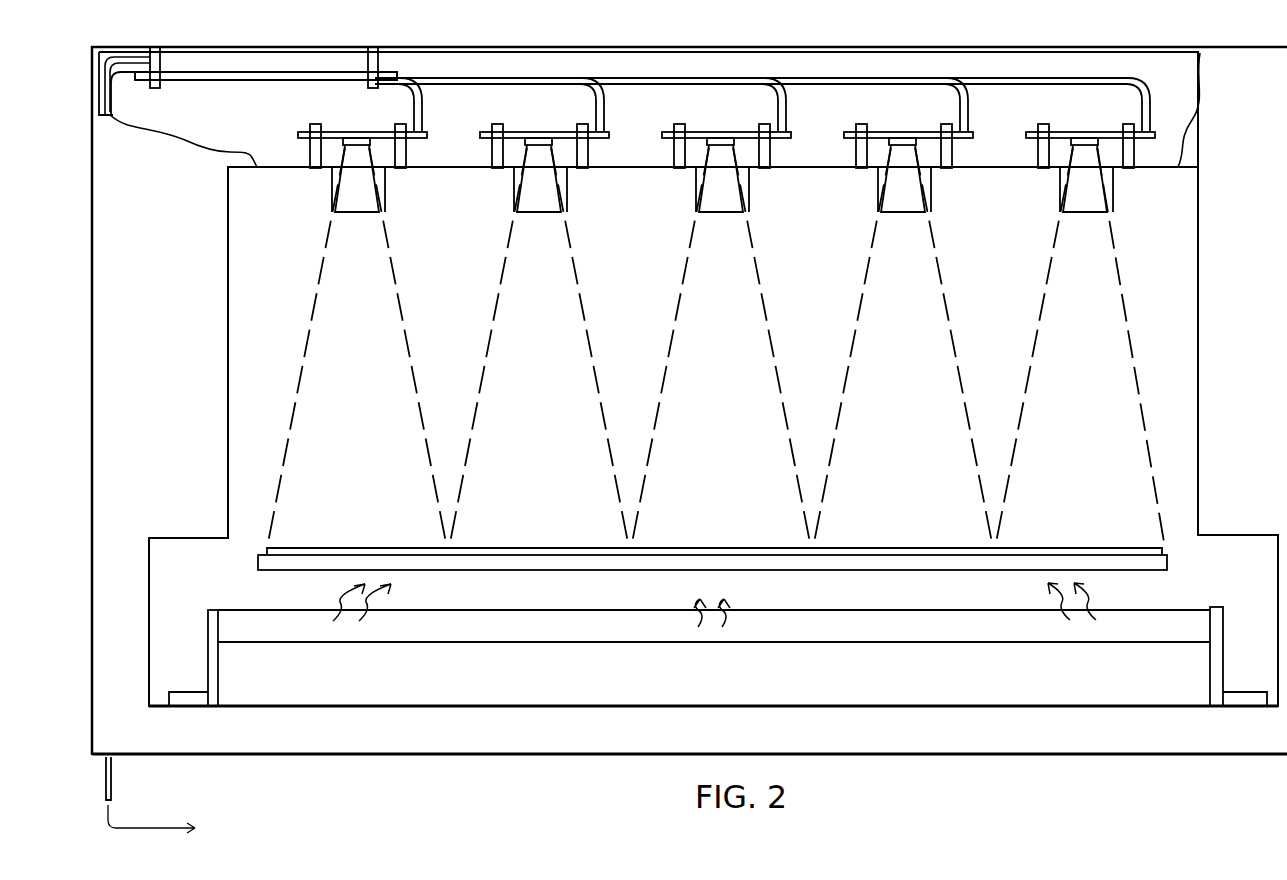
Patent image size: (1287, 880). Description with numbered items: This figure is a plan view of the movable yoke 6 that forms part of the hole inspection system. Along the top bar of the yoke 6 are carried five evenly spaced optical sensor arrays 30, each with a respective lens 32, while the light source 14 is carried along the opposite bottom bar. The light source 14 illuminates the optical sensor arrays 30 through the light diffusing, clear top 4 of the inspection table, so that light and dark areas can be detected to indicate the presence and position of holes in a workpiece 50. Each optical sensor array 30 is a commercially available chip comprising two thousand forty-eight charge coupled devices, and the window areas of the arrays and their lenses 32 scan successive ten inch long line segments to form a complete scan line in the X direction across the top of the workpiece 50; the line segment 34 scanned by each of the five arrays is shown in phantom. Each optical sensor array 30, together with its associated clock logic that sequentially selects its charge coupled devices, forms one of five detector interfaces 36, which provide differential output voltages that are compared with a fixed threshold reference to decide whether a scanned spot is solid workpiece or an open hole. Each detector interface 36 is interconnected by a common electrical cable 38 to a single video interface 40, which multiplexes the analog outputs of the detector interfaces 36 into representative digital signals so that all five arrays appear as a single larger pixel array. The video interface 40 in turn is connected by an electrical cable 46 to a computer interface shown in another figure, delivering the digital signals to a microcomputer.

The light diffusing, clear top 4 is at (268, 565).
The yoke 6 is at (562, 757).
The light source 14 is at (497, 630).
The optical sensor array 30 is at (357, 140).
The lens 32 is at (332, 182).
The line segment 34 is at (410, 363).
The detector interface 36 is at (382, 133).
The electrical cable 38 is at (488, 78).
The video interface 40 is at (224, 72).
The electrical cable 46 is at (112, 778).
The workpiece 50 is at (338, 545).